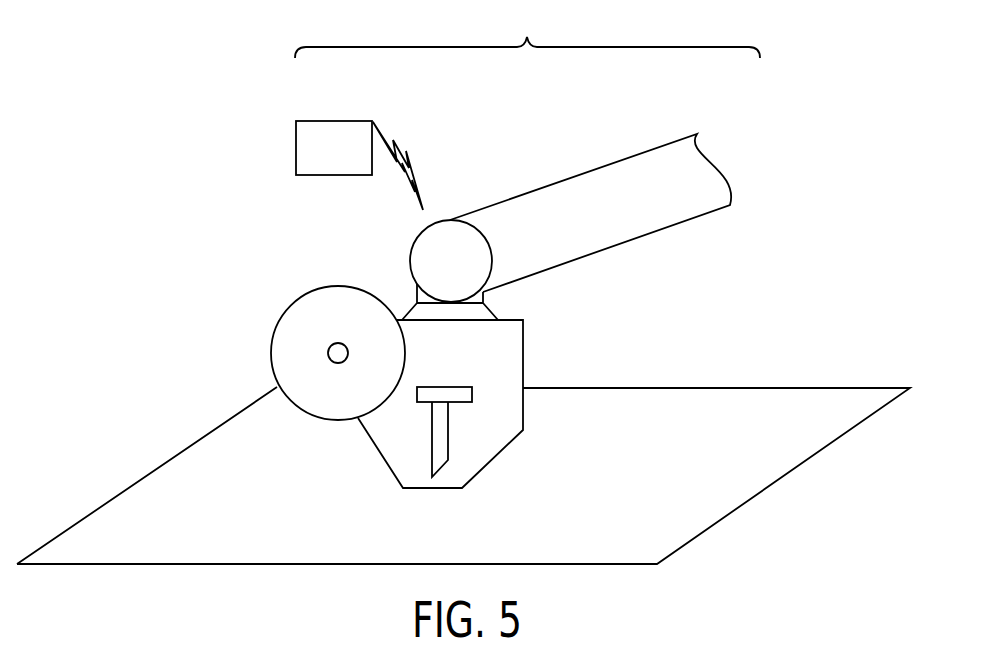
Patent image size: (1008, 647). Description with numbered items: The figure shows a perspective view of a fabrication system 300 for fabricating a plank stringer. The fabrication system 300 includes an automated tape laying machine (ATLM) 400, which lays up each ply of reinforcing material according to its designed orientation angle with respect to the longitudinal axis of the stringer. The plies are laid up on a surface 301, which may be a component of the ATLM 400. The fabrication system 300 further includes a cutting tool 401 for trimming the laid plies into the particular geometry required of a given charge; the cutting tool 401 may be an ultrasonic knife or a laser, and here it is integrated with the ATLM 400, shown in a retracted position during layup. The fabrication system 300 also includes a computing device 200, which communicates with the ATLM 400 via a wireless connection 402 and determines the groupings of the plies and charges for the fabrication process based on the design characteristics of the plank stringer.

The fabrication system 300 is at (527, 29).
The computing device 200 is at (318, 161).
The wireless connection 402 is at (401, 152).
The automated tape laying machine (ATLM) 400 is at (523, 343).
The cutting tool 401 is at (448, 435).
The surface 301 is at (747, 388).